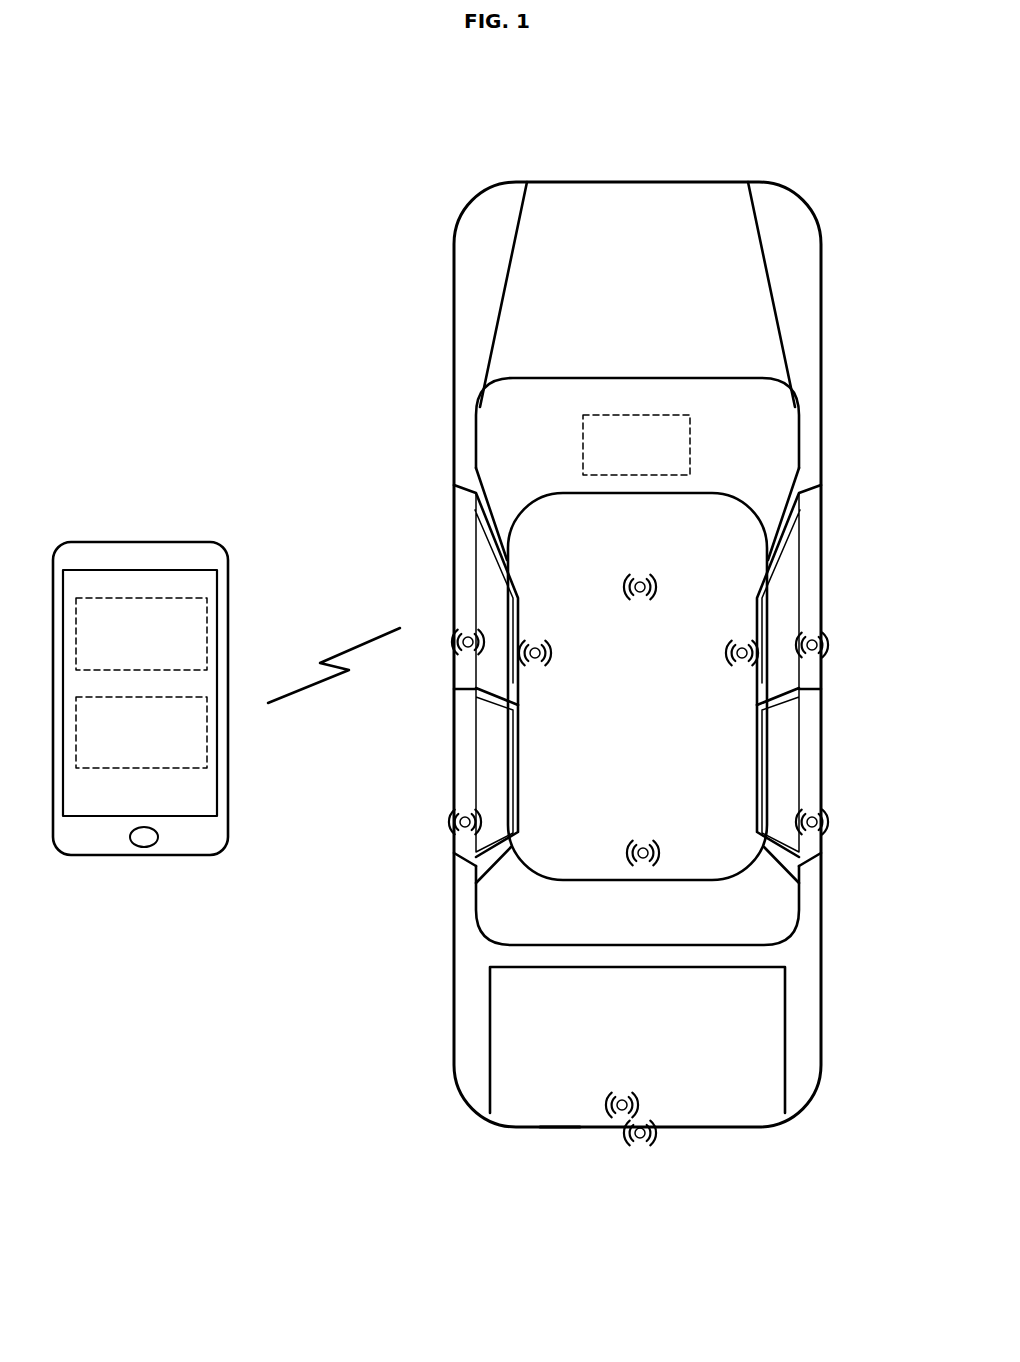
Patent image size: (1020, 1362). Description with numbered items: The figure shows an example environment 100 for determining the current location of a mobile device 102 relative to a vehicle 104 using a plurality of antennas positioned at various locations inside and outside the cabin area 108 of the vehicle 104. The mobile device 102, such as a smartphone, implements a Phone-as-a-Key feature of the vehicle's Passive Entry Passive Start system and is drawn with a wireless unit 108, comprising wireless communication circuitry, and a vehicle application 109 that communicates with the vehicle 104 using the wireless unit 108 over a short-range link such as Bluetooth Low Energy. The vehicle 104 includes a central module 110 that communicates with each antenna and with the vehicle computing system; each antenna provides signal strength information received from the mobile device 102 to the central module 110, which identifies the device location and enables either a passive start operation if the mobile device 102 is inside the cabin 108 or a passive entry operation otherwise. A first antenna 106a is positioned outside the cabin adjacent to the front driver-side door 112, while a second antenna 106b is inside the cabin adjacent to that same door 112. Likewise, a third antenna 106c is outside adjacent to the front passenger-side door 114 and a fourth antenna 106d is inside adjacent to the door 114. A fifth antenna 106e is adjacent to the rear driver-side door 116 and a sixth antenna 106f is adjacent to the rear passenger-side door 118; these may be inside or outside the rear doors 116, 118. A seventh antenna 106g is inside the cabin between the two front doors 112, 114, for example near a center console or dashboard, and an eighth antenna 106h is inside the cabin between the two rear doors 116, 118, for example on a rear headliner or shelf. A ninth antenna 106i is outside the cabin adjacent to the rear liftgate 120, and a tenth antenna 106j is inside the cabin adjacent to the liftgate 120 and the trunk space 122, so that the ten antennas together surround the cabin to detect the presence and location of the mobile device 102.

The environment 100 is at (442, 178).
The mobile device 102 is at (118, 543).
The vehicle 104 is at (708, 182).
The first antenna 106a is at (464, 628).
The second antenna 106b is at (537, 666).
The third antenna 106c is at (812, 636).
The fourth antenna 106d is at (742, 643).
The fifth antenna 106e is at (463, 810).
The sixth antenna 106f is at (819, 810).
The seventh antenna 106g is at (641, 577).
The eighth antenna 106h is at (643, 840).
The ninth antenna 106i is at (646, 1124).
The tenth antenna 106j is at (620, 1095).
The wireless unit 108 is at (205, 748).
The vehicle application 109 is at (197, 597).
The central module 110 is at (633, 415).
The front driver-side door 112 is at (453, 514).
The front passenger-side door 114 is at (823, 573).
The rear driver-side door 116 is at (454, 748).
The rear passenger-side door 118 is at (810, 752).
The rear liftgate 120 is at (555, 1130).
The trunk space 122 is at (516, 1050).